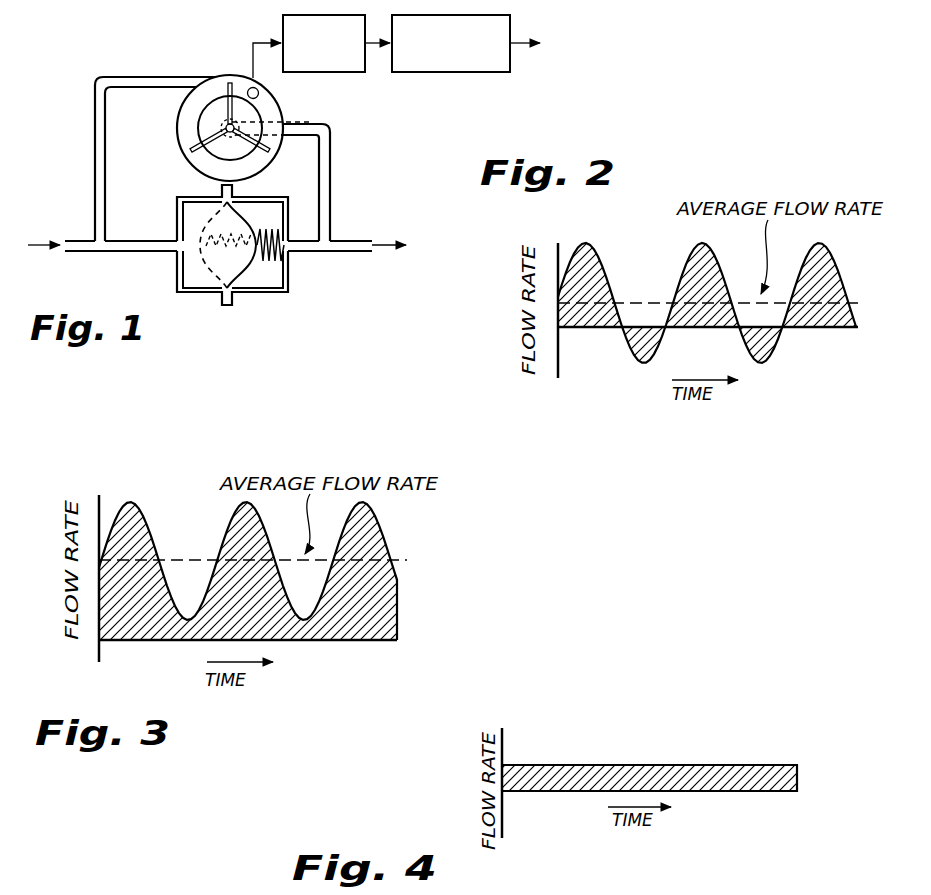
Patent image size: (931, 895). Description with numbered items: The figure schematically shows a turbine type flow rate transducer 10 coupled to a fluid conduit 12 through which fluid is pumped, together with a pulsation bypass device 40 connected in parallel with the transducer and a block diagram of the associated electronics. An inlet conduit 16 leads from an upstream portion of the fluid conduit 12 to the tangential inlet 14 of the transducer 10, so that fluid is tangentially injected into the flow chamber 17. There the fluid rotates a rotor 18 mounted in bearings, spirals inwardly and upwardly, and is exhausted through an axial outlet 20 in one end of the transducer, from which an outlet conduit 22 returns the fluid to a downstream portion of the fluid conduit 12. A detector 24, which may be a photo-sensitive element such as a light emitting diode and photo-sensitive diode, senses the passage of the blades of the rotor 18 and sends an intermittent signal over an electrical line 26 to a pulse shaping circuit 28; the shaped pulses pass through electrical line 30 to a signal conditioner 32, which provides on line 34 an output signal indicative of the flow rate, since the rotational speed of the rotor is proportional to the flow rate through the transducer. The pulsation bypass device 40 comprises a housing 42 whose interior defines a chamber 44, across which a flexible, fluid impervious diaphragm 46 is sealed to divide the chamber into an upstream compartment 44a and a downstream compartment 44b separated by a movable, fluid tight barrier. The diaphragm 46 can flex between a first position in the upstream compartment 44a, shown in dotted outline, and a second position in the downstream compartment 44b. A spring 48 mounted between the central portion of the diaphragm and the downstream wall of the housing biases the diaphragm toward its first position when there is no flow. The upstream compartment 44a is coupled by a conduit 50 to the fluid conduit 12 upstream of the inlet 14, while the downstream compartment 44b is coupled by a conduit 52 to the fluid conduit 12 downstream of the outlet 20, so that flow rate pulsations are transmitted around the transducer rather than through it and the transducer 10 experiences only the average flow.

The flow rate transducer 10 is at (177, 141).
The fluid conduit 12 is at (87, 256).
The tangential inlet 14 is at (197, 80).
The inlet conduit 16 is at (95, 166).
The flow chamber 17 is at (194, 108).
The rotor 18 is at (232, 124).
The axial outlet 20 is at (222, 150).
The outlet conduit 22 is at (332, 160).
The detector 24 is at (260, 93).
The electrical line 26 is at (264, 31).
The pulse shaping circuit 28 is at (343, 72).
The electrical line 30 is at (378, 47).
The signal conditioner 32 is at (482, 72).
The output line 34 is at (538, 31).
The pulsation bypass device 40 is at (207, 303).
The housing 42 is at (287, 293).
The chamber 44 is at (252, 215).
The upstream compartment 44a is at (180, 270).
The downstream compartment 44b is at (285, 271).
The diaphragm 46 is at (232, 294).
The spring 48 is at (258, 235).
The conduit 50 is at (152, 241).
The conduit 52 is at (310, 240).